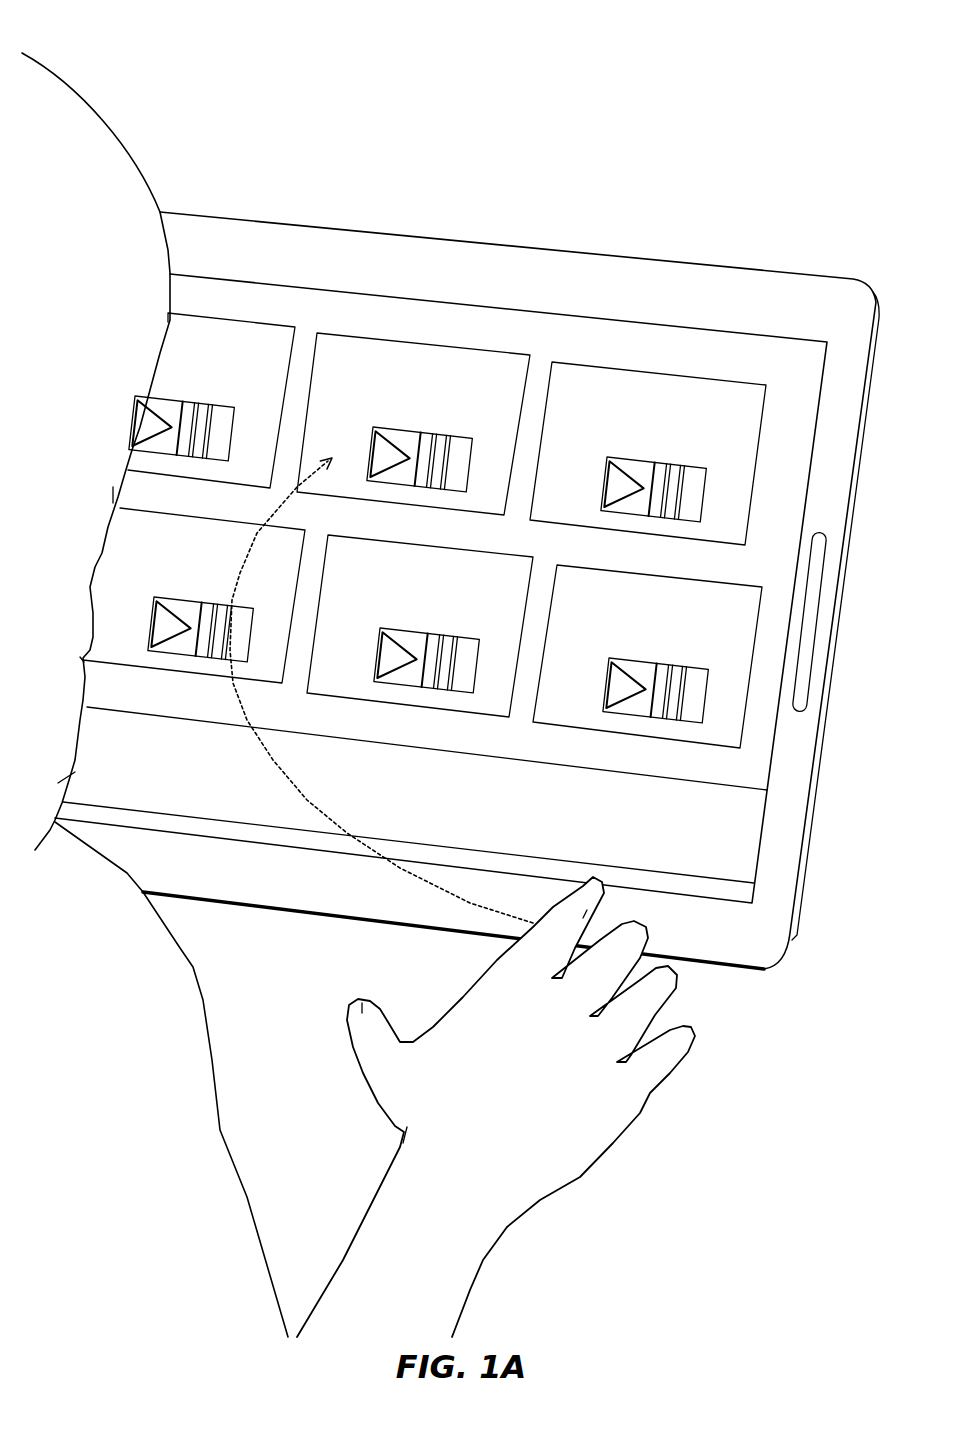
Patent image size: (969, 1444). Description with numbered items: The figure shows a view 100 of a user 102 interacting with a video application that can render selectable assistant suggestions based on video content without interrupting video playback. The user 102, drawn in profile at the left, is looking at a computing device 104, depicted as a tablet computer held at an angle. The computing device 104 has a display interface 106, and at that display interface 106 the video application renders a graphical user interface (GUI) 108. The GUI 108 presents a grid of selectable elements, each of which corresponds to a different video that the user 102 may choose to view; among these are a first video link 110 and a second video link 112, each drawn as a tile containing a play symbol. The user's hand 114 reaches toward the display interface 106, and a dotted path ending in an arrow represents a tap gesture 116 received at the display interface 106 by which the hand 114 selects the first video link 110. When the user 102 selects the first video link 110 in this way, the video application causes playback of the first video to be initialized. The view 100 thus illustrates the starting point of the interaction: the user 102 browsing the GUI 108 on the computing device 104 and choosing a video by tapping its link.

The view 100 is at (196, 80).
The user 102 is at (99, 265).
The computing device 104 is at (527, 248).
The display interface 106 is at (747, 333).
The graphical user interface (GUI) 108 is at (578, 355).
The first video link 110 is at (431, 399).
The second video link 112 is at (442, 601).
The hand 114 is at (525, 1100).
The tap gesture 116 is at (240, 570).